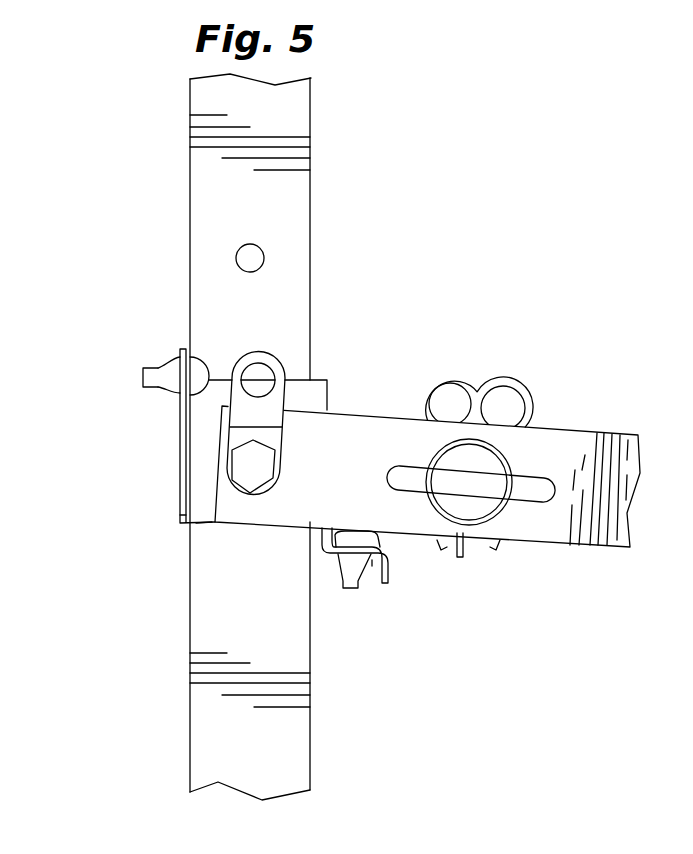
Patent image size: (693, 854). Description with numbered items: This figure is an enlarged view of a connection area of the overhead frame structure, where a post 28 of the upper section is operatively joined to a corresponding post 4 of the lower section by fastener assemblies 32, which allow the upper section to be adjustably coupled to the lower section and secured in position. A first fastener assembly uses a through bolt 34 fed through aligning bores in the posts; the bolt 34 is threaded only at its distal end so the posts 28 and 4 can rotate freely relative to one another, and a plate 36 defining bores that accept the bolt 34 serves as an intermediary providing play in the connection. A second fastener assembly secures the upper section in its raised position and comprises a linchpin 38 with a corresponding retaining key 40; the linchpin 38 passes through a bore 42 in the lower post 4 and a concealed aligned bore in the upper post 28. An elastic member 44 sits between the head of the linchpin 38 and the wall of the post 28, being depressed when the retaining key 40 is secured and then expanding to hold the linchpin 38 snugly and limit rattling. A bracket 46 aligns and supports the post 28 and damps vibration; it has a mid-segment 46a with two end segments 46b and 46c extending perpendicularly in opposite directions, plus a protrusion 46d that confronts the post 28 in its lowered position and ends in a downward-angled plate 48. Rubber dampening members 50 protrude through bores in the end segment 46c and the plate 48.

The post 4 is at (190, 718).
The post 28 is at (608, 547).
The fastener assembly 32 is at (222, 498).
The through bolt 34 is at (237, 460).
The plate 36 is at (277, 358).
The linchpin 38 is at (510, 462).
The retaining key 40 is at (500, 378).
The bore 42 is at (260, 248).
The elastic member 44 is at (513, 468).
The bracket 46 is at (168, 417).
The mid-segment 46a is at (203, 521).
The end segment 46b is at (328, 392).
The end segment 46c is at (178, 520).
The protrusion 46d is at (398, 569).
The plate 48 is at (372, 566).
The dampening member 50 is at (262, 481).